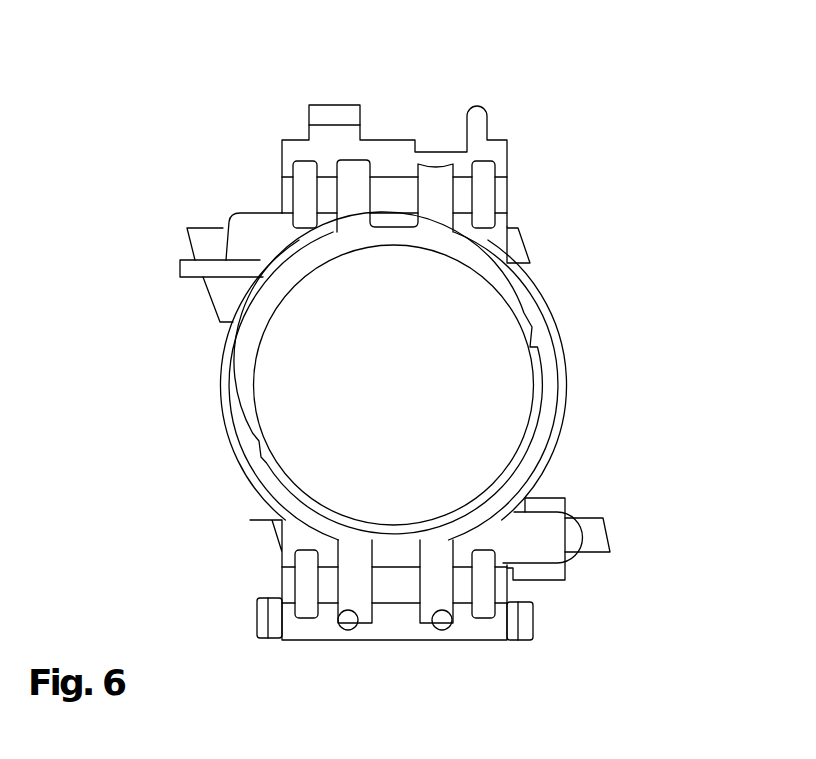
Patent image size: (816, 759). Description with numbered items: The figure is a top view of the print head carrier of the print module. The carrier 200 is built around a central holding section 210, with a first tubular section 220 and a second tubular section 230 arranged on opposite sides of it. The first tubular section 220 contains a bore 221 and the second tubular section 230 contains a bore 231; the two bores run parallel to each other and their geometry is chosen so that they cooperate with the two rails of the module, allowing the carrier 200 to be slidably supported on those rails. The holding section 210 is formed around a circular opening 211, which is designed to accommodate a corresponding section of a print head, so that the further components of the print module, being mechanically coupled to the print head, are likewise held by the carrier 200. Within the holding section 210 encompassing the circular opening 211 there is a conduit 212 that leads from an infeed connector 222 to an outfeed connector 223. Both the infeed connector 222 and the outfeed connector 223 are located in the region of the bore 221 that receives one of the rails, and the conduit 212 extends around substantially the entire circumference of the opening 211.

The carrier 200 is at (166, 72).
The holding section 210 is at (567, 380).
The circular opening 211 is at (477, 337).
The conduit 212 is at (240, 368).
The first tubular section 220 is at (508, 587).
The bore 221 is at (283, 580).
The infeed connector 222 is at (348, 632).
The outfeed connector 223 is at (438, 632).
The second tubular section 230 is at (283, 157).
The bore 231 is at (503, 198).